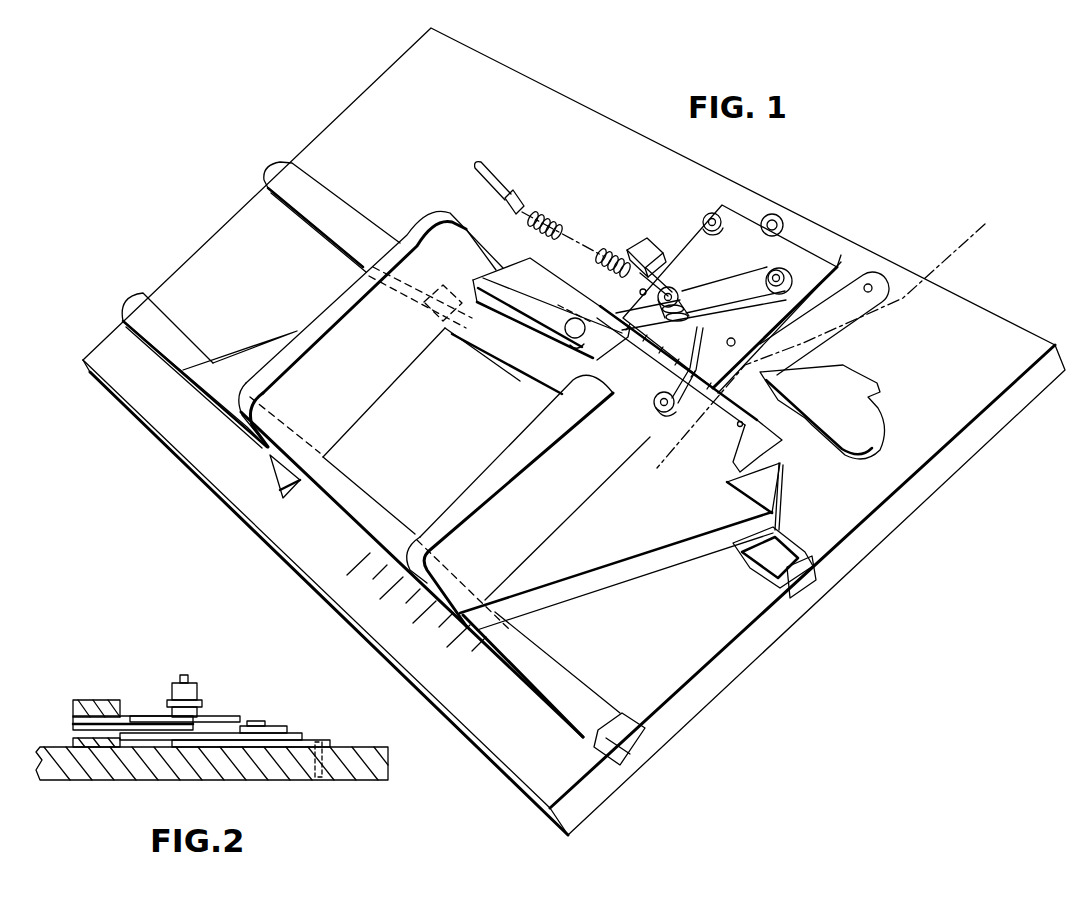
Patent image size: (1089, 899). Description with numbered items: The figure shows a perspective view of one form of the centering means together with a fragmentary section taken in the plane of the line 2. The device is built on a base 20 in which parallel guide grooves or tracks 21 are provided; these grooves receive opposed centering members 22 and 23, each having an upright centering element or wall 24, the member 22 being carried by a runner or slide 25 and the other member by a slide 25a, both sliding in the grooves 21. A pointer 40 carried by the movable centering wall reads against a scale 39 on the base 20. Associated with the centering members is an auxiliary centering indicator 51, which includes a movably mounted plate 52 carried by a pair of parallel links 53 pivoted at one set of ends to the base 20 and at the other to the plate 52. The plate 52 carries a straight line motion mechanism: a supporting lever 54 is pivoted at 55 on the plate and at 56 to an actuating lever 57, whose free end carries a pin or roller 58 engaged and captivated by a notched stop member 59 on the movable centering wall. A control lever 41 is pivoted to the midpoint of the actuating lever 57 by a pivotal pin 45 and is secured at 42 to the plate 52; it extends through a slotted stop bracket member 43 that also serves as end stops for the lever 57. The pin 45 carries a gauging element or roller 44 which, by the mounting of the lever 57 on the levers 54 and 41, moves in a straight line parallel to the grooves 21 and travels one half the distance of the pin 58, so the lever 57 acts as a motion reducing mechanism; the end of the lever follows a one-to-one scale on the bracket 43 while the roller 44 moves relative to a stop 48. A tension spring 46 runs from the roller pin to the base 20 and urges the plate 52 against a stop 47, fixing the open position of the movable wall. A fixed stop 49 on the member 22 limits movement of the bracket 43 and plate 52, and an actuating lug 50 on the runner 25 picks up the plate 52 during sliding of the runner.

In FIG. 1, the base 20 is at (721, 631).
In FIG. 2, the base 20 is at (352, 787).
In FIG. 1, the guide grooves or tracks 21 is at (622, 748).
In FIG. 1, the centering member 22 is at (650, 574).
In FIG. 1, the centering member 23 is at (252, 353).
In FIG. 1, the centering element or wall 24 is at (468, 496).
In FIG. 1, the runner or slide 25 is at (790, 549).
In FIG. 1, the slide 25a is at (582, 690).
In FIG. 1, the scale 39 is at (433, 641).
In FIG. 1, the pointer 40 is at (292, 493).
In FIG. 1, the control lever 41 is at (686, 349).
In FIG. 2, the control lever 41 is at (135, 716).
In FIG. 1, the pivot 42 is at (650, 408).
In FIG. 1, the slotted stop bracket member 43 is at (741, 409).
In FIG. 2, the slotted stop bracket member 43 is at (112, 700).
In FIG. 1, the gauging element or roller 44 is at (740, 312).
In FIG. 2, the gauging element or roller 44 is at (198, 696).
In FIG. 1, the pivotal pin 45 is at (671, 290).
In FIG. 2, the pivotal pin 45 is at (186, 675).
In FIG. 1, the tension spring 46 is at (553, 224).
In FIG. 1, the stop 47 is at (630, 246).
In FIG. 1, the stop 48 is at (813, 378).
In FIG. 1, the fixed stop 49 is at (780, 490).
In FIG. 1, the actuating lug 50 is at (558, 305).
In FIG. 1, the auxiliary centering indicator 51 is at (743, 329).
In FIG. 2, the auxiliary centering indicator 51 is at (276, 692).
In FIG. 1, the movably mounted plate 52 is at (845, 255).
In FIG. 2, the movably mounted plate 52 is at (331, 742).
In FIG. 1, the parallel links 53 is at (775, 216).
In FIG. 2, the parallel links 53 is at (303, 733).
In FIG. 1, the supporting lever 54 is at (730, 296).
In FIG. 2, the supporting lever 54 is at (286, 724).
In FIG. 1, the pivot 55 is at (705, 224).
In FIG. 1, the pivot 56 is at (790, 278).
In FIG. 1, the actuating lever 57 is at (734, 312).
In FIG. 2, the actuating lever 57 is at (222, 714).
In FIG. 1, the pin or roller 58 is at (559, 309).
In FIG. 1, the notched stop member 59 is at (556, 290).
In FIG. 1, the section line 2- 2 is at (970, 245).